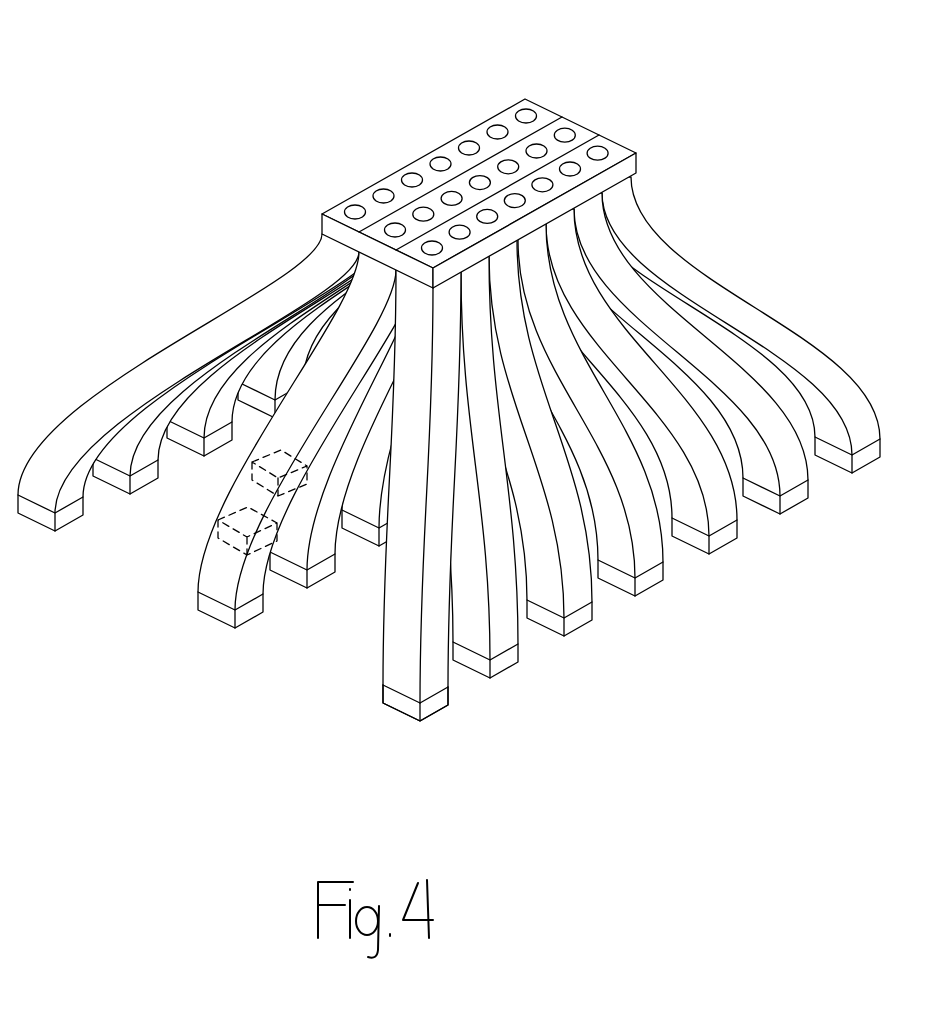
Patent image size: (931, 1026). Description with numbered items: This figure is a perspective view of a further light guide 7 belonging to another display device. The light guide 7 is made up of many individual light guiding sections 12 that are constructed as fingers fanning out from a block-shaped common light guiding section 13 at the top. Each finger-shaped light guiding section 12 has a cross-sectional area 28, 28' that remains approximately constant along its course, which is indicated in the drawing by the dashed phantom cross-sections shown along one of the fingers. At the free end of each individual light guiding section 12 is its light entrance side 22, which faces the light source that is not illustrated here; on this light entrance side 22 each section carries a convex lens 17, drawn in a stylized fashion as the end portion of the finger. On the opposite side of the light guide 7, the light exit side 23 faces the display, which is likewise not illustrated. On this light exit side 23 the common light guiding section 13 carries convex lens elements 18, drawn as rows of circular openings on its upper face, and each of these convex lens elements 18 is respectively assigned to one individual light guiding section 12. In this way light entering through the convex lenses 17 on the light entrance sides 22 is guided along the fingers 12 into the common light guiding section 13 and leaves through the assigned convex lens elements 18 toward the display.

The light guide 7 is at (449, 476).
The light guiding section 12 is at (383, 544).
The common light guiding section 13 is at (419, 144).
The convex lens 17 is at (437, 703).
The convex lens element 18 is at (524, 112).
The light entrance side 22 is at (385, 717).
The light exit side 23 is at (428, 116).
The cross-sectional area 28 is at (187, 582).
The cross-sectional area 28' is at (203, 514).